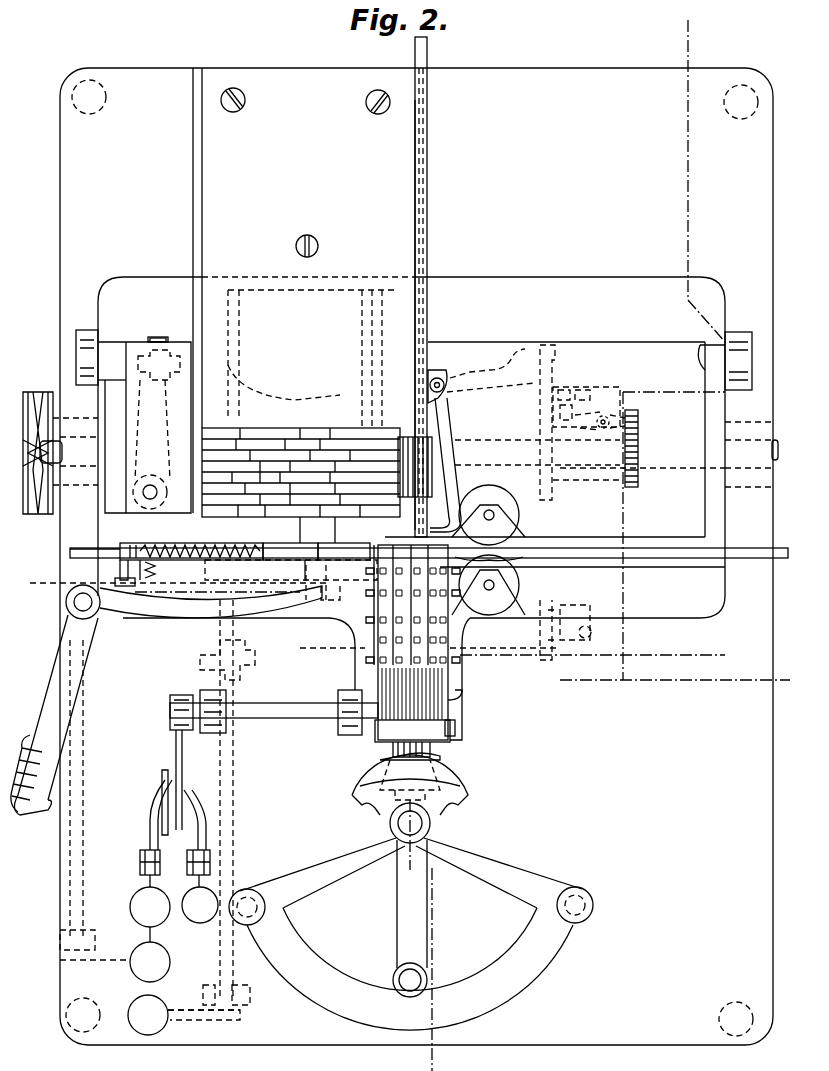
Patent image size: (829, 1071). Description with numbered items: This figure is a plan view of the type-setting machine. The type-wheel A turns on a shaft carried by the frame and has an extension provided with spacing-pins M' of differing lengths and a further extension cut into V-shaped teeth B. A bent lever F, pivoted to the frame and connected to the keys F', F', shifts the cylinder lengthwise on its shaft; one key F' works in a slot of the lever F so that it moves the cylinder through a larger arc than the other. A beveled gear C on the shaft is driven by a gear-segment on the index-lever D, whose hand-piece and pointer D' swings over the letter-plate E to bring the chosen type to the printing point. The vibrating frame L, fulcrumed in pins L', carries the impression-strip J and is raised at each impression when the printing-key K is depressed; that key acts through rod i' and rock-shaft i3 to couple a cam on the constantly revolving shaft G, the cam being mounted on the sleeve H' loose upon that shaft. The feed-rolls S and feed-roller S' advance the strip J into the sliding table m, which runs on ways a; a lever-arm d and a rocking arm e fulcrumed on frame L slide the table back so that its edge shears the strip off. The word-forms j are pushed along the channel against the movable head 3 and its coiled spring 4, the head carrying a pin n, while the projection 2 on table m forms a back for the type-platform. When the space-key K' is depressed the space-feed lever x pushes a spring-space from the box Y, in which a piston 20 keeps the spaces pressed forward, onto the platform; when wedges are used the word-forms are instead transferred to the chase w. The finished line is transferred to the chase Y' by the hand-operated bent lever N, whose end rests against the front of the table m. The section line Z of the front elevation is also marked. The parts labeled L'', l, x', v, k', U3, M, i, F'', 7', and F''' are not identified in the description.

The piston 20 is at (427, 57).
The box Y is at (435, 315).
The chase Y' is at (294, 290).
The section line z z Z is at (425, 556).
The space-feed lever x is at (574, 545).
The vibrating frame L is at (438, 447).
The pins L' is at (133, 421).
The right bracket L'' is at (716, 361).
The pin n is at (71, 470).
The rocking arm e is at (160, 338).
The ways a is at (159, 365).
The lever l is at (147, 430).
The lever-arm d is at (165, 505).
The movable head 3 is at (301, 483).
The coiled spring 4 is at (245, 541).
The word-forms j is at (318, 530).
The sleeve H' is at (404, 488).
The sliding table m is at (246, 573).
The projection 2 is at (304, 576).
The chase w is at (443, 380).
The lever x' is at (449, 465).
The link v is at (533, 422).
The rod i' is at (540, 435).
The rack k' is at (674, 536).
The shaft G is at (642, 458).
The feed-roller S' is at (488, 515).
The feed-rolls S is at (488, 585).
The impression-strip J is at (755, 548).
The link U3 is at (580, 594).
The type-wheel A is at (412, 651).
The left guide M is at (361, 605).
The spacing-pins M' is at (402, 615).
The bracket i is at (430, 632).
The cylinder extension B is at (448, 703).
The latch F'' is at (465, 728).
The beveled gear C is at (430, 760).
The bent lever N is at (170, 771).
The link 7' is at (212, 810).
The keys F' is at (274, 719).
The bent lever F is at (155, 782).
The rock-shaft i3 is at (85, 818).
The printing-key K is at (173, 942).
The space-key K' is at (202, 1000).
The key link F''' is at (162, 934).
The letter-plate E is at (520, 990).
The index-lever D is at (412, 884).
The hand-piece and pointer D' is at (423, 976).